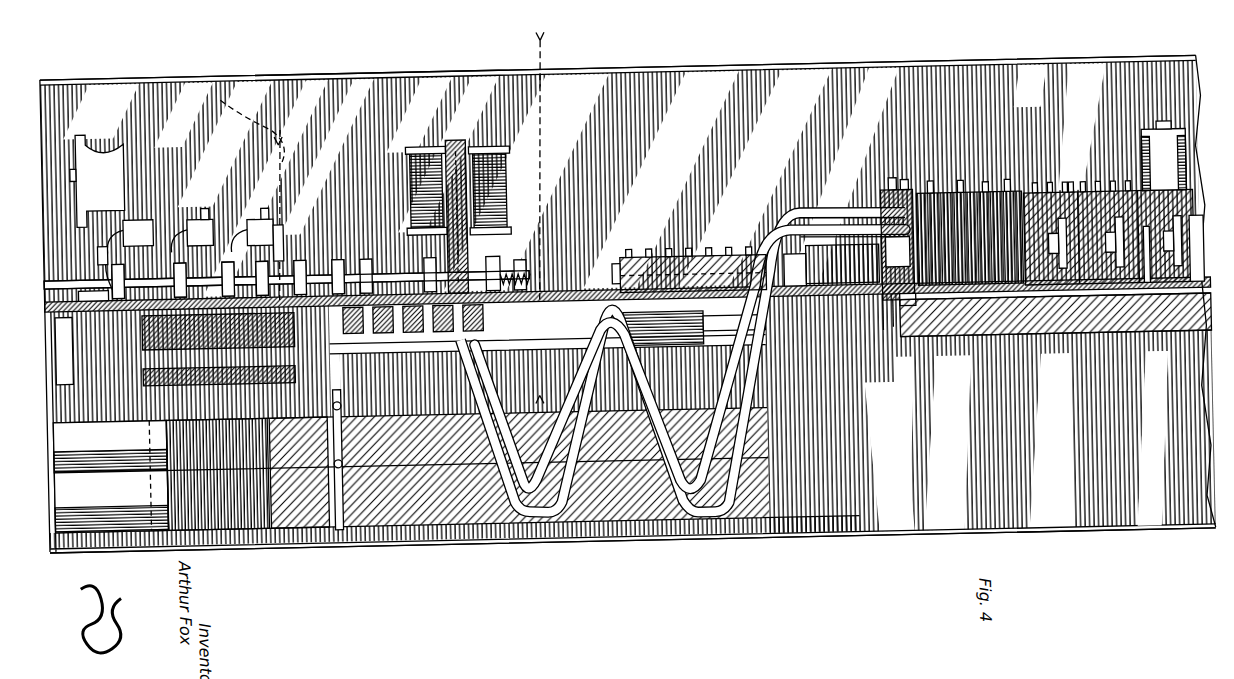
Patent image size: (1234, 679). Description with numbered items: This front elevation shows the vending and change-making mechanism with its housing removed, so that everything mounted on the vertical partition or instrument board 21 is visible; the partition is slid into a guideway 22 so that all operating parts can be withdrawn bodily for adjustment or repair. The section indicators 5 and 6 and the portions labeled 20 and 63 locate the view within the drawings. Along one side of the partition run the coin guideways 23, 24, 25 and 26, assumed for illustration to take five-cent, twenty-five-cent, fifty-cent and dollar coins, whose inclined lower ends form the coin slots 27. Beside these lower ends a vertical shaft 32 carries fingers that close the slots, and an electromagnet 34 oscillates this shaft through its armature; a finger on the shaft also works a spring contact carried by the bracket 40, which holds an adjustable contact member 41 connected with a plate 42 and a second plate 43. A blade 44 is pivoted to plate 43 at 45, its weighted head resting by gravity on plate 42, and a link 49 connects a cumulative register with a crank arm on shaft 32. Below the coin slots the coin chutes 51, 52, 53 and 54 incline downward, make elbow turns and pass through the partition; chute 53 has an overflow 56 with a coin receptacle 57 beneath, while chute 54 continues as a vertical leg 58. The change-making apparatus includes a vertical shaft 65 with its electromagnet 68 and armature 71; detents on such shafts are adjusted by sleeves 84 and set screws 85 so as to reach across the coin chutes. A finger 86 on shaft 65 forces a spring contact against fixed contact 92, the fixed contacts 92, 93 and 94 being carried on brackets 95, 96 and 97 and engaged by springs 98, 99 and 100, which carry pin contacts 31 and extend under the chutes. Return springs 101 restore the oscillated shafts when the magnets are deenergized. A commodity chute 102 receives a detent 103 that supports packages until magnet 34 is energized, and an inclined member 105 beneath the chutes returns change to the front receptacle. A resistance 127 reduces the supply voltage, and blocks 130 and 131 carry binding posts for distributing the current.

The section line 5- 5 is at (539, 208).
The section line 6- 6 is at (292, 412).
The base frame 20 is at (755, 83).
The partition 21 is at (800, 316).
The guideway 22 is at (83, 331).
The coin guideway 23 is at (1065, 317).
The coin guideway 24 is at (1085, 312).
The coin guideway 25 is at (1097, 227).
The coin guideway 26 is at (1156, 274).
The coin slots 27 is at (1067, 237).
The pin contact 31 is at (1073, 176).
The vertical shaft 32 is at (1201, 248).
The electromagnet 34 is at (1188, 189).
The bracket 40 is at (887, 248).
The adjustable contact member 41 is at (920, 319).
The plate 42 is at (898, 208).
The second plate 43 is at (890, 348).
The blade 44 is at (912, 218).
The pivot 45 is at (900, 318).
The link 49 is at (806, 274).
The coin chute 51 is at (782, 224).
The coin chute 52 is at (797, 233).
The coin chute 53 is at (812, 241).
The coin chute 54 is at (827, 251).
The overflow 56 is at (555, 467).
The coin receptacle 57 is at (110, 476).
The vertical leg 58 is at (380, 547).
The panel 63 is at (313, 426).
The shaft 65 is at (300, 290).
The electromagnet 68 is at (433, 198).
The armature 71 is at (501, 272).
The sleeves 84 is at (361, 272).
The set screws 85 is at (341, 276).
The finger 86 is at (118, 291).
The fixed contact 92 is at (130, 283).
The fixed contact 93 is at (192, 279).
The fixed contact 94 is at (274, 275).
The bracket 95 is at (160, 245).
The bracket 96 is at (240, 276).
The bracket 97 is at (302, 240).
The spring 98 is at (116, 256).
The spring 99 is at (182, 243).
The spring 100 is at (262, 226).
The springs 101 is at (516, 285).
The commodity chute 102 is at (1089, 357).
The detent 103 is at (1145, 353).
The inclined member 105 is at (104, 369).
The resistance 127 is at (230, 104).
The block 130 is at (624, 277).
The block 131 is at (721, 272).